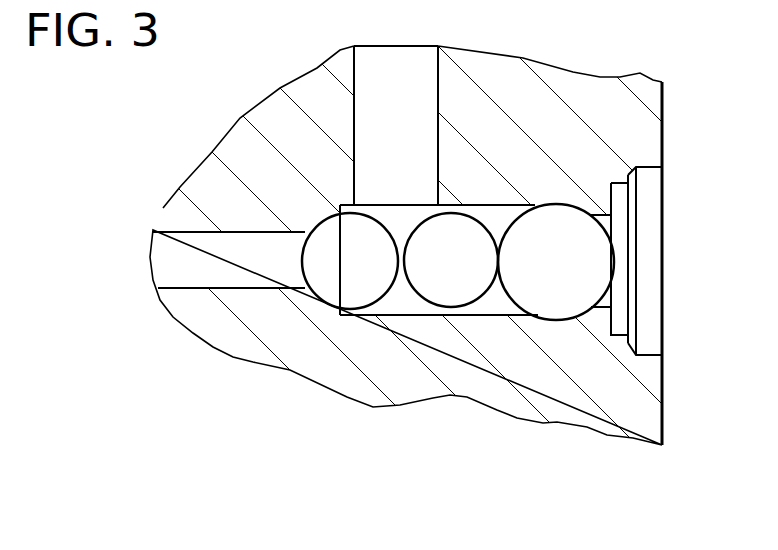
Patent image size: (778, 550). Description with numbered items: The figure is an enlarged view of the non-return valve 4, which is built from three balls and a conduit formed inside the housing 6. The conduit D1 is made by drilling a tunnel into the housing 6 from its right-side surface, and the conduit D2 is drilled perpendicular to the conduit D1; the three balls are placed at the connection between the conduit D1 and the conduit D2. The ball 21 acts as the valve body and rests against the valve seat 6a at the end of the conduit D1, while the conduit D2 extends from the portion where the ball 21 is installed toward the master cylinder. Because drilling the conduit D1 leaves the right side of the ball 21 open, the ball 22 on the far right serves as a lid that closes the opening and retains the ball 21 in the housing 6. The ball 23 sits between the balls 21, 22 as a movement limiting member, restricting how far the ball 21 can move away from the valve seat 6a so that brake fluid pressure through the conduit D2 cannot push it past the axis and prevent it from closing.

The housing 6 is at (665, 95).
The valve seat 6a is at (322, 205).
The non-return valve 4 is at (500, 210).
The ball 21 is at (345, 278).
The ball 22 is at (557, 295).
The ball 23 is at (462, 287).
The conduit D1 is at (205, 278).
The conduit D2 is at (437, 102).